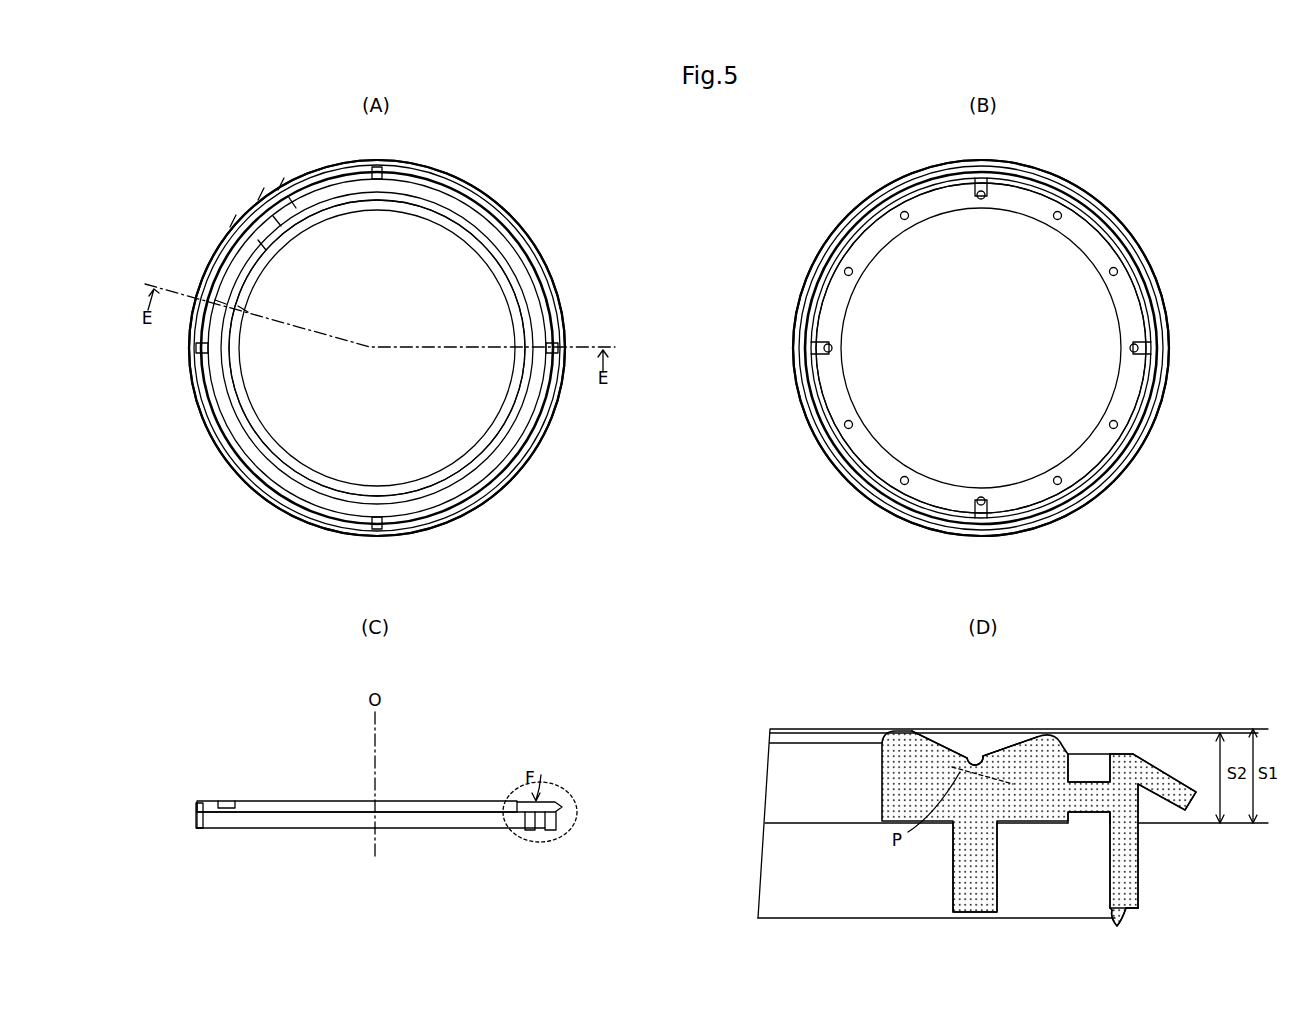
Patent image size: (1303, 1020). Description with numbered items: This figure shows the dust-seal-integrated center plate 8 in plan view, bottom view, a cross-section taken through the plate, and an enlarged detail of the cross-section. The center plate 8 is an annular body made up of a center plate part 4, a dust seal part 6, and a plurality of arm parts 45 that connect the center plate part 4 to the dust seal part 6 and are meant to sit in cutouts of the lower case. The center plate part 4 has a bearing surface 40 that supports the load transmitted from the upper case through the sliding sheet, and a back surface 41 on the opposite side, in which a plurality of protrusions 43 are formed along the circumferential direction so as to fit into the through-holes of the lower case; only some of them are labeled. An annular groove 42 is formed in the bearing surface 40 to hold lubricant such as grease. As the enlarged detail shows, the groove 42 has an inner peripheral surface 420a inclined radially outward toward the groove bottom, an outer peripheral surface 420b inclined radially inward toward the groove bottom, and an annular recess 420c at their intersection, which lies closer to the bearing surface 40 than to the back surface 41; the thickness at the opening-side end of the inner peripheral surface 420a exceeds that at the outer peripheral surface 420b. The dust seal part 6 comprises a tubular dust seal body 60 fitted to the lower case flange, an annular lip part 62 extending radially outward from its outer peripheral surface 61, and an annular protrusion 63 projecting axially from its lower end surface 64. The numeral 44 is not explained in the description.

The center plate part 4 is at (478, 255).
The dust seal part 6 is at (256, 492).
The dust-seal-integrated center plate 8 is at (591, 147).
The bearing surface 40 is at (478, 206).
The back surface 41 is at (1133, 378).
The annular groove 42 is at (323, 198).
The protrusions 43 is at (1133, 428).
The inner ring portion 44 is at (415, 495).
The arm parts 45 is at (385, 160).
The dust seal body 60 is at (548, 240).
The outer peripheral surface 61 is at (1128, 217).
The lip part 62 is at (567, 272).
The annular protrusion 63 is at (1175, 930).
The lower end surface 64 is at (1128, 913).
The inner peripheral surface 420a is at (230, 227).
The outer peripheral surface 420b is at (278, 190).
The annular recess 420c is at (258, 200).